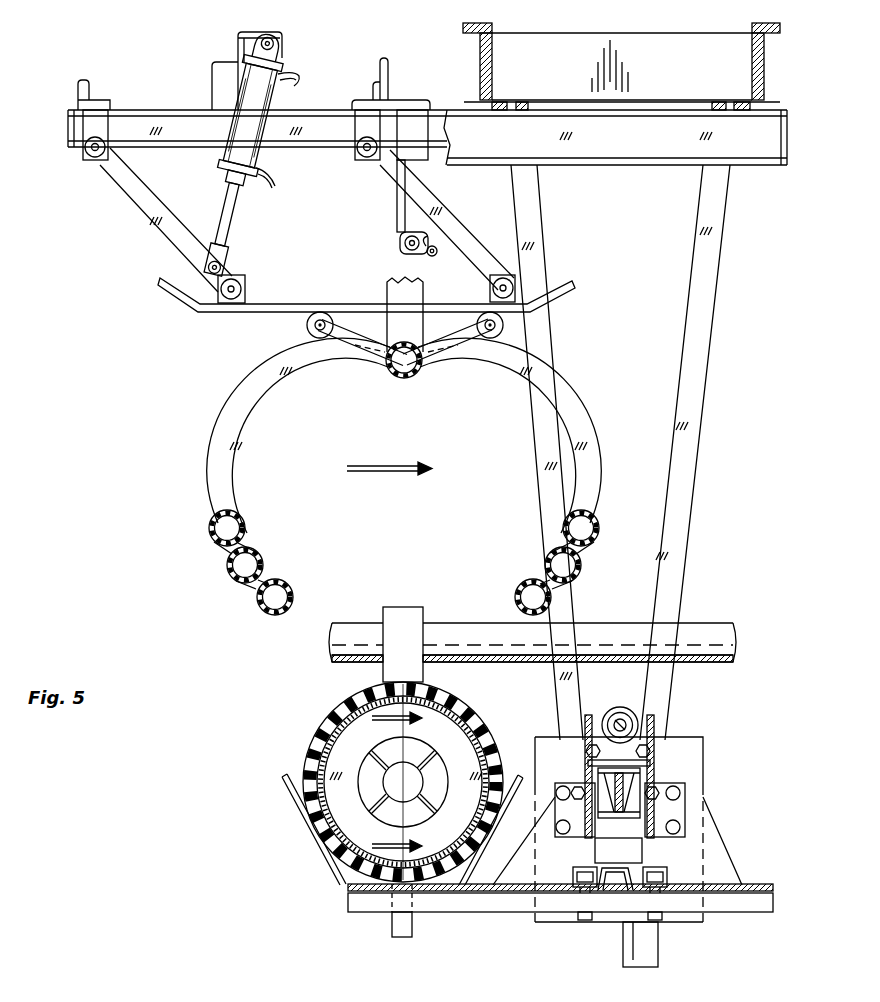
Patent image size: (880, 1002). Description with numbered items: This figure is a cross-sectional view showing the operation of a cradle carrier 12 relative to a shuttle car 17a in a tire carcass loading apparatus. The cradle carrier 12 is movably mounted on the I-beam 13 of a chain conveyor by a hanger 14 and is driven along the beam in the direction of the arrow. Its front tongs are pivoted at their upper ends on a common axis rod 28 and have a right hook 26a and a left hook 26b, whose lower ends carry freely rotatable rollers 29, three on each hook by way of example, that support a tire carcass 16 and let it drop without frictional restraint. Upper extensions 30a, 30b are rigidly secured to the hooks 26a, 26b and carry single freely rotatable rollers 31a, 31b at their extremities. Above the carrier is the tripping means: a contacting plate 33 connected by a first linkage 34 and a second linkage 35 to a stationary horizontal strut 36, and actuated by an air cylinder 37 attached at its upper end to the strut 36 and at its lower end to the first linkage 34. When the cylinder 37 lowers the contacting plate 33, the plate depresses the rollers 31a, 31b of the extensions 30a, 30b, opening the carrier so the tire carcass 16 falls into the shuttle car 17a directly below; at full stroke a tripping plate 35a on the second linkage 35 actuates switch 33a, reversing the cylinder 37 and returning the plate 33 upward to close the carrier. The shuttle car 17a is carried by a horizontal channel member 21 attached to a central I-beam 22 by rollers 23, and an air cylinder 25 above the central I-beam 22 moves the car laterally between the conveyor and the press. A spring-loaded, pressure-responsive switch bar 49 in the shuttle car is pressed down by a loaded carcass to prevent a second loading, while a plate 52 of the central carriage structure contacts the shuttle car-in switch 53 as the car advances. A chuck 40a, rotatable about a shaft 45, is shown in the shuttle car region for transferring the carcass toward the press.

The cradle carrier 12 is at (387, 476).
The I-beam 13 is at (661, 145).
The hanger 14 is at (392, 291).
The tire carcass 16 is at (386, 781).
The shuttle car 17a is at (322, 852).
The horizontal channel member 21 is at (470, 908).
The central I-beam 22 is at (622, 820).
The rollers 23 is at (630, 786).
The air cylinder 25 is at (617, 712).
The right hook 26a is at (575, 425).
The left hook 26b is at (236, 421).
The common axis rod 28 is at (410, 378).
The freely rotatable rollers 29 is at (283, 588).
The upper extension 30a is at (342, 330).
The upper extension 30b is at (460, 332).
The freely rotatable roller 31a is at (308, 326).
The freely rotatable roller 31b is at (503, 327).
The contacting plate 33 is at (304, 310).
The switch 33a is at (406, 243).
The first linkage 34 is at (153, 218).
The second linkage 35 is at (398, 188).
The tripping plate 35a is at (439, 256).
The stationary horizontal strut 36 is at (207, 135).
The air cylinder 37 is at (278, 86).
The chuck 40a is at (375, 765).
The shaft 45 is at (482, 640).
The spring-loaded pressure-responsive switch bar 49 is at (392, 932).
The plate 52 is at (592, 790).
The shuttle car-in switch 53 is at (655, 951).